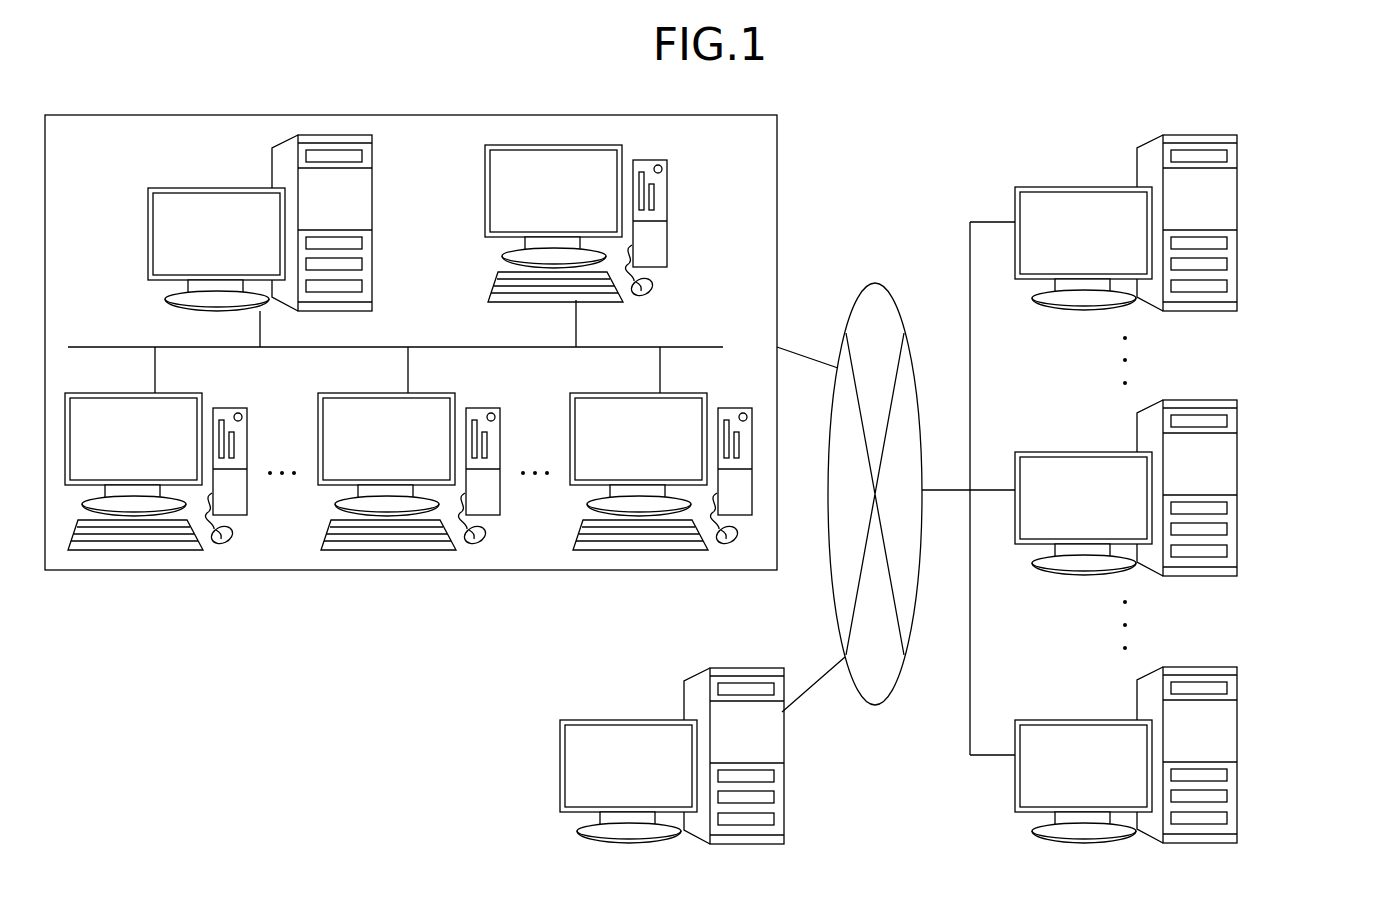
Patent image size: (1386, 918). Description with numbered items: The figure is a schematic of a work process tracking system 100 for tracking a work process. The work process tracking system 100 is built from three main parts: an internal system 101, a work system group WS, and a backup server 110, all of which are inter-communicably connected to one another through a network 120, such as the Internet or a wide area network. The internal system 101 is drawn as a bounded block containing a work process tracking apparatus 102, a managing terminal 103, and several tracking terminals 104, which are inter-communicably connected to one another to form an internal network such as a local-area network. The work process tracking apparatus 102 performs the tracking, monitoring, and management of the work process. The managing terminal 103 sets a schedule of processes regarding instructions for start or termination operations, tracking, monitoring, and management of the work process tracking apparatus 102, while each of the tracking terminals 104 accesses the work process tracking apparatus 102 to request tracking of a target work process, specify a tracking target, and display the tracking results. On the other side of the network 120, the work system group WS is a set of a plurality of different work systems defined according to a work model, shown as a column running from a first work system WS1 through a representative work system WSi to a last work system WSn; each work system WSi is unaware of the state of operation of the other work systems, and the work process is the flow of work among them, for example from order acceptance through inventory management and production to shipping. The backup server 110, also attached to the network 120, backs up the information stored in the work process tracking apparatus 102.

The work process tracking system 100 is at (1054, 91).
The internal system 101 is at (405, 114).
The work process tracking apparatus 102 is at (375, 182).
The managing terminal 103 is at (672, 182).
The tracking terminals 104 is at (230, 408).
The backup server 110 is at (746, 668).
The network 120 is at (875, 283).
The work system group WS is at (1307, 170).
The work system WS1 is at (1237, 185).
The work system WSi is at (1237, 452).
The work system WSn is at (1237, 718).